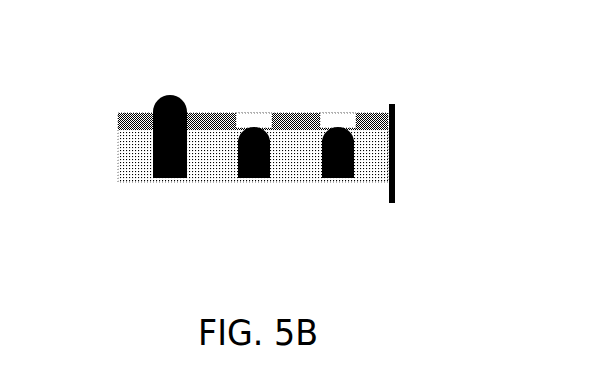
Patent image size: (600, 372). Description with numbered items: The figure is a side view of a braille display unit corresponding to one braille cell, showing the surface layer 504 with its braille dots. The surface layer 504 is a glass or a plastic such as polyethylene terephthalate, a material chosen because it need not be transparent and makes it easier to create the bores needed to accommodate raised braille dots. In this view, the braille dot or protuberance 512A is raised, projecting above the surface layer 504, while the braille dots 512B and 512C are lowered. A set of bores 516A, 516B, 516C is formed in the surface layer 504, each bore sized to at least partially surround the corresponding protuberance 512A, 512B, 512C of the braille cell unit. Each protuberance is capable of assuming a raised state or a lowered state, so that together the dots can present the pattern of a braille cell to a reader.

The surface layer 504 is at (118, 140).
The braille dot 512A is at (171, 95).
The braille dot 512B is at (252, 127).
The braille dot 512C is at (342, 127).
The bore 516A is at (153, 168).
The bore 516B is at (238, 168).
The bore 516C is at (322, 165).